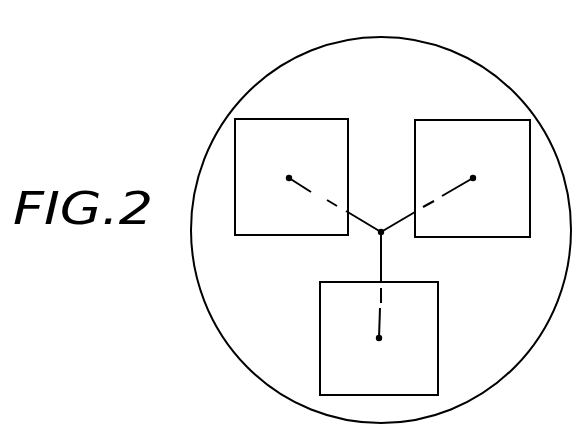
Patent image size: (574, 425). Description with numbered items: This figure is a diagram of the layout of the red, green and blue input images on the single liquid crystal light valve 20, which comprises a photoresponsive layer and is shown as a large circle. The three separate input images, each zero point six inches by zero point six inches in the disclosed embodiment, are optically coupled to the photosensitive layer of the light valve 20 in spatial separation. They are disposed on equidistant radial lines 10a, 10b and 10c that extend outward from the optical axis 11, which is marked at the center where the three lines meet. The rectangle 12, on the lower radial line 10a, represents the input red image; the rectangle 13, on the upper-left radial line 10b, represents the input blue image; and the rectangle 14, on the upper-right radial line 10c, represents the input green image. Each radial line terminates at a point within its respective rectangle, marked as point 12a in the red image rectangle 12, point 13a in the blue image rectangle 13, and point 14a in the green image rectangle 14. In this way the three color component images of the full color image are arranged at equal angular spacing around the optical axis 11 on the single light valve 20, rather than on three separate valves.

The single liquid crystal light valve 20 is at (347, 38).
The rectangle 13 is at (298, 119).
The rectangle 14 is at (472, 121).
The rectangle 12 is at (439, 343).
The optical axis 11 is at (378, 235).
The radial line 10a is at (383, 260).
The radial line 10b is at (317, 192).
The radial line 10c is at (452, 190).
The terminal point in region 12 12a is at (381, 341).
The terminal point in region 13 13a is at (287, 181).
The terminal point in region 14 14a is at (474, 181).